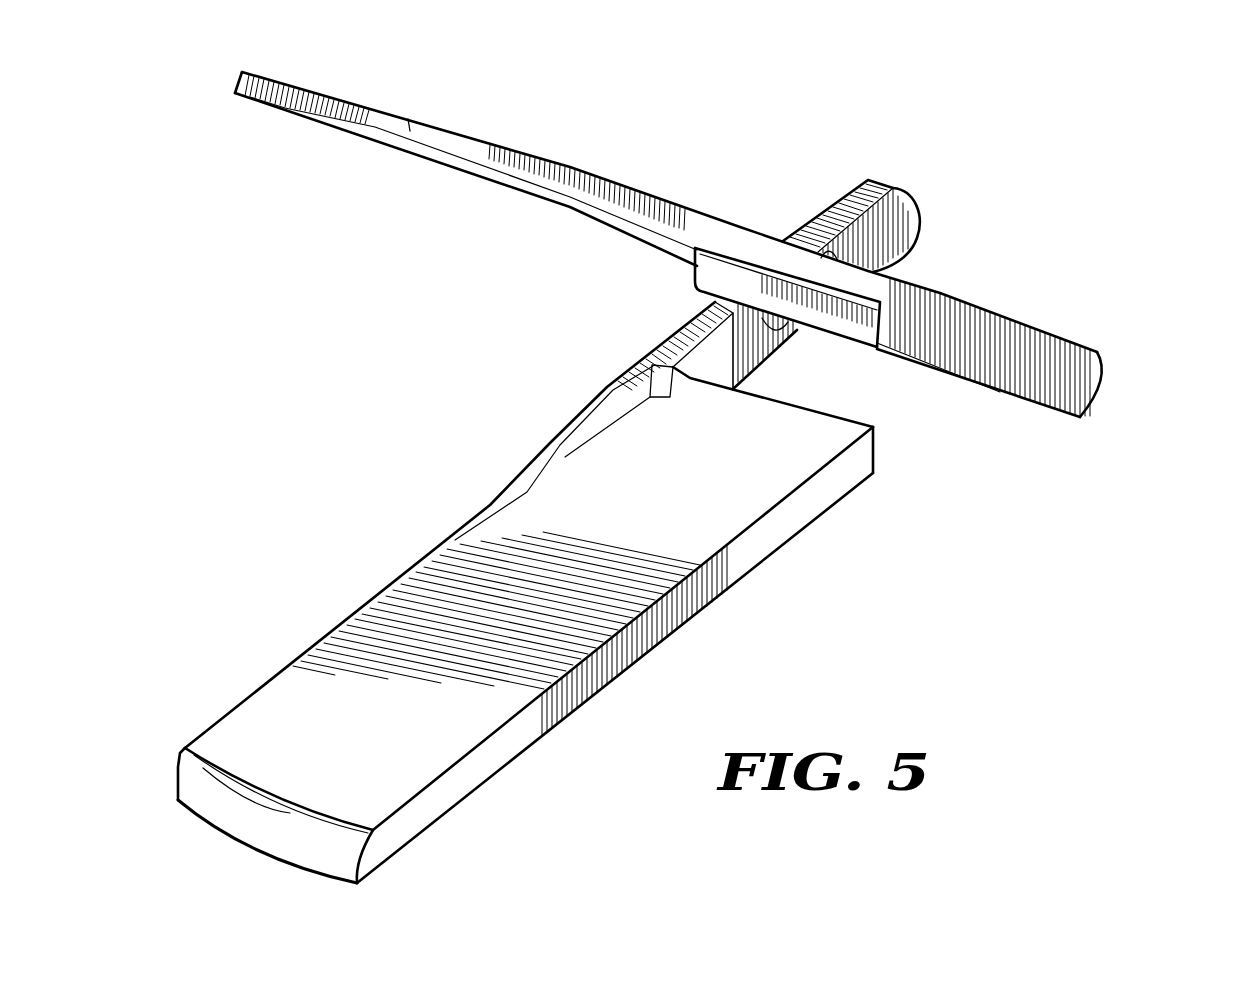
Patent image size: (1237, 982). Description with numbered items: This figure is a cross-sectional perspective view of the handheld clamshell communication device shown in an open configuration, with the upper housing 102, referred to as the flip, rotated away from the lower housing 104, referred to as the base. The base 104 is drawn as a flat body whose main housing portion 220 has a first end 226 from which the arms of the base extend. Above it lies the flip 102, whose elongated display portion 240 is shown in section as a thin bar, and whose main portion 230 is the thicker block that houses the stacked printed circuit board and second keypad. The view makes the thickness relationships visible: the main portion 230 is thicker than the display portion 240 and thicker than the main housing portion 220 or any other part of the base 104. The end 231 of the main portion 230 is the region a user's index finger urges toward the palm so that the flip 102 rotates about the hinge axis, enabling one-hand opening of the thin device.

The upper housing 102 is at (294, 135).
The lower housing 104 is at (231, 669).
The main housing portion 220 is at (530, 750).
The first end 226 is at (890, 457).
The main portion 230 is at (1022, 367).
The end 231 is at (1127, 387).
The display portion 240 is at (432, 120).